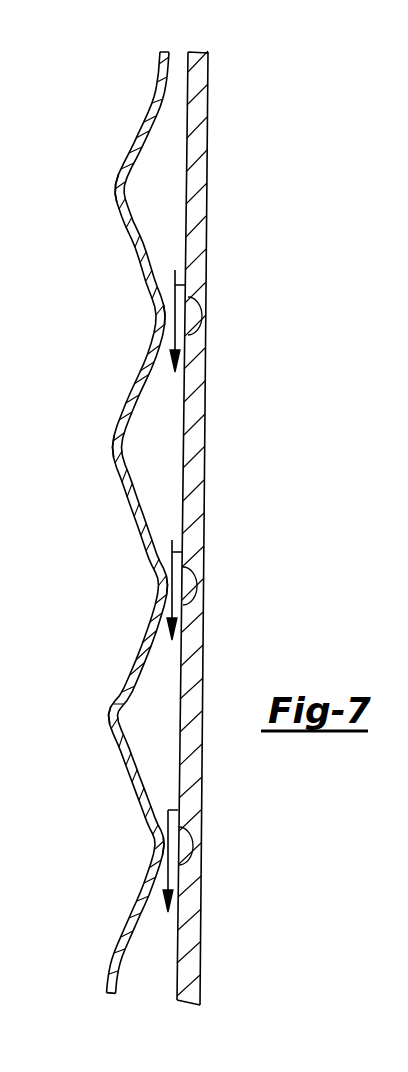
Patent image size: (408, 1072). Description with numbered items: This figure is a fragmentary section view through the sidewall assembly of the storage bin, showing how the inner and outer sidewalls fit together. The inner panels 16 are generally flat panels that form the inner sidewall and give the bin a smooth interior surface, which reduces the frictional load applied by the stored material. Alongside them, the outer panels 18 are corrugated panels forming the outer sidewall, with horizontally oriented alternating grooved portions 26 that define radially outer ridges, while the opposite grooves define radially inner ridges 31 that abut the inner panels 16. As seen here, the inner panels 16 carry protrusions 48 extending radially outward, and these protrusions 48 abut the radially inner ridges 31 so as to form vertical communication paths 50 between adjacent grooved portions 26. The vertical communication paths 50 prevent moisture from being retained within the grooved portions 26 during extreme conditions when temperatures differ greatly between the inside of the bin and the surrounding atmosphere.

The inner panels 16 is at (202, 67).
The outer panels 18 is at (155, 80).
The grooved portions 26 is at (115, 193).
The protrusions 48 is at (165, 318).
The vertical communication paths 50 is at (166, 312).
The radially inner ridges 31 is at (156, 336).